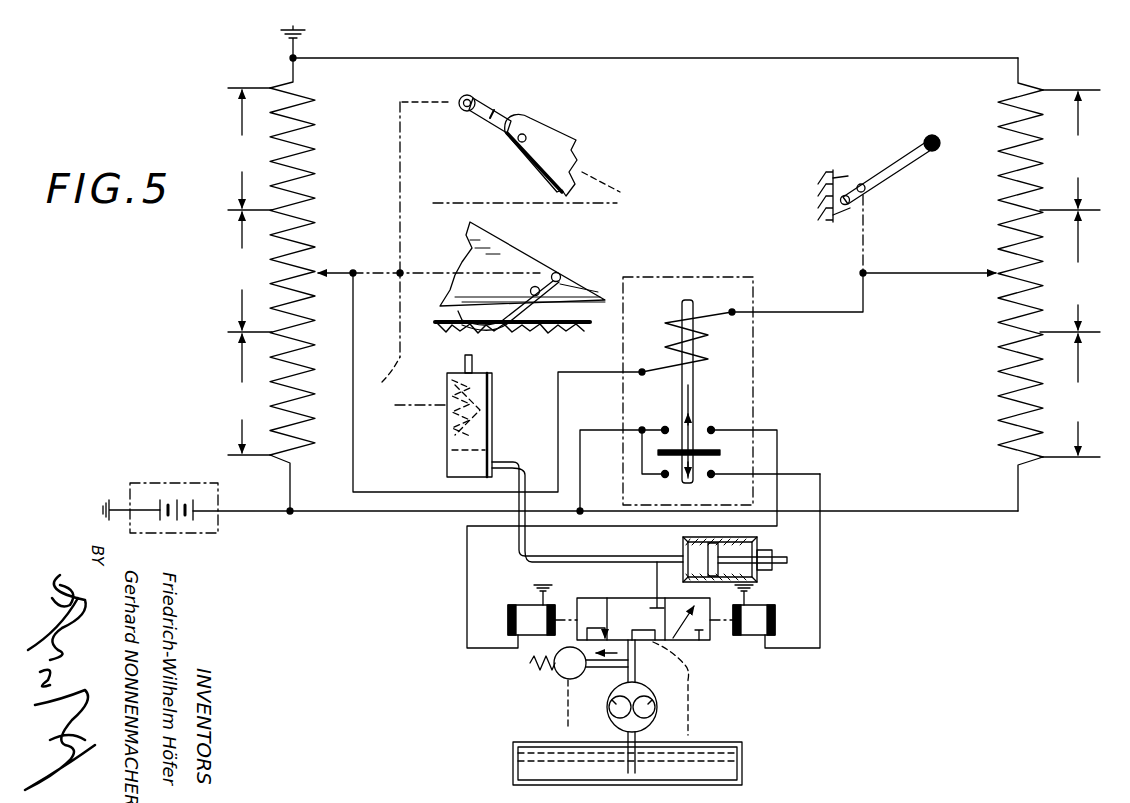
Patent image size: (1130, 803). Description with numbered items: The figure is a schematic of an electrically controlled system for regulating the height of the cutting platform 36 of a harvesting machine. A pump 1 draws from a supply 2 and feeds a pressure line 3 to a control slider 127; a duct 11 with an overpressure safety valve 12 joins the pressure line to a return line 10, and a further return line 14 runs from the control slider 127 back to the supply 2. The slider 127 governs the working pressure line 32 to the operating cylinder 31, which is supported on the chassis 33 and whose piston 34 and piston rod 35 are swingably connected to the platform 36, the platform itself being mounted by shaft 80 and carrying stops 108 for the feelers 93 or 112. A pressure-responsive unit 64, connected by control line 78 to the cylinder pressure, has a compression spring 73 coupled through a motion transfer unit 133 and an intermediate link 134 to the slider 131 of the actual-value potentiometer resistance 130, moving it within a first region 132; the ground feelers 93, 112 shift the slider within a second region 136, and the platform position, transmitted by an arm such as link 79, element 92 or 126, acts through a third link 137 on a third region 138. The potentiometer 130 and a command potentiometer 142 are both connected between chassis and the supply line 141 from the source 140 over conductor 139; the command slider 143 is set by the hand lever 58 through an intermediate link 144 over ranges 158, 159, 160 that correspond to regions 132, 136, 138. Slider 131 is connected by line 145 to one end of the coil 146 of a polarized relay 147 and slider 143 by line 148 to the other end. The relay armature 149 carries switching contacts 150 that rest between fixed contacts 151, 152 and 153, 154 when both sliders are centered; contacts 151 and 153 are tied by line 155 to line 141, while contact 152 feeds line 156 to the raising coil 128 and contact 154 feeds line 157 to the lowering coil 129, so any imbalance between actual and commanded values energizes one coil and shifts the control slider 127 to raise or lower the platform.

The pump 1 is at (657, 712).
The supply 2 is at (513, 752).
The pressure line 3 is at (663, 668).
The return line 10 is at (566, 727).
The duct 11 is at (607, 733).
The overpressure safety valve 12 is at (555, 671).
The return line 14 is at (692, 715).
The operating cylinder 31 is at (760, 541).
The working pressure line 32 is at (655, 584).
The chassis 33 is at (826, 178).
The piston 34 is at (683, 557).
The piston rod 35 is at (762, 567).
The cutting platform 36 is at (548, 222).
The manually operable lever 58 is at (897, 167).
The pressure-responsive link element 64 is at (438, 460).
The compression spring 73 is at (478, 420).
The control line 78 is at (580, 552).
The connecting link 79 is at (537, 105).
The shaft 80 is at (518, 138).
The position-responsive element 92 is at (537, 105).
The feeler arms 93 is at (512, 342).
The stops 108 is at (555, 295).
The feelers 112 is at (498, 324).
The position-responsive element 126 is at (497, 118).
The control slider 127 is at (716, 653).
The magnetic control coil 128 is at (522, 605).
The magnetic control coil 129 is at (778, 620).
The resistance 130 is at (307, 198).
The slider 131 is at (342, 268).
The first region 132 is at (246, 394).
The motion transfer unit 133 is at (402, 390).
The intermediate link 134 is at (362, 290).
The second region 136 is at (246, 272).
The third link 137 is at (400, 137).
The third region 138 is at (246, 149).
The supply conductor 139 is at (700, 60).
The source 140 is at (180, 483).
The line 141 is at (357, 522).
The second potentiometer 142 is at (1000, 352).
The slider 143 is at (905, 274).
The intermediate link 144 is at (868, 228).
The line 145 is at (353, 455).
The coil 146 is at (668, 321).
The polarized relay 147 is at (727, 277).
The line 148 is at (812, 313).
The armature 149 is at (694, 382).
The switching contacts 150 is at (722, 452).
The contact 151 is at (665, 427).
The contact 152 is at (711, 427).
The contact 153 is at (665, 478).
The contact 154 is at (711, 478).
The line 155 is at (578, 450).
The line 156 is at (778, 456).
The line 157 is at (822, 481).
The resistance range 158 is at (1070, 395).
The control region 159 is at (1070, 272).
The final region 160 is at (1070, 150).